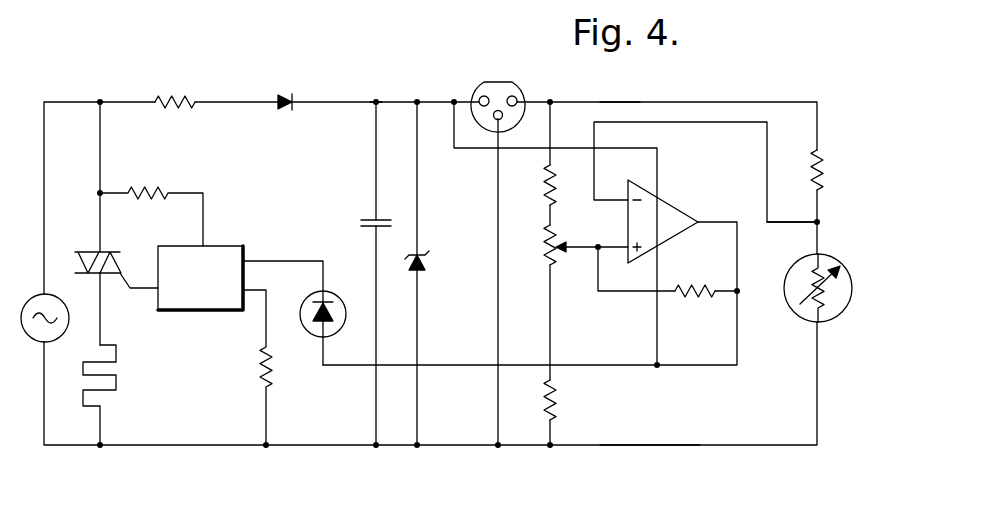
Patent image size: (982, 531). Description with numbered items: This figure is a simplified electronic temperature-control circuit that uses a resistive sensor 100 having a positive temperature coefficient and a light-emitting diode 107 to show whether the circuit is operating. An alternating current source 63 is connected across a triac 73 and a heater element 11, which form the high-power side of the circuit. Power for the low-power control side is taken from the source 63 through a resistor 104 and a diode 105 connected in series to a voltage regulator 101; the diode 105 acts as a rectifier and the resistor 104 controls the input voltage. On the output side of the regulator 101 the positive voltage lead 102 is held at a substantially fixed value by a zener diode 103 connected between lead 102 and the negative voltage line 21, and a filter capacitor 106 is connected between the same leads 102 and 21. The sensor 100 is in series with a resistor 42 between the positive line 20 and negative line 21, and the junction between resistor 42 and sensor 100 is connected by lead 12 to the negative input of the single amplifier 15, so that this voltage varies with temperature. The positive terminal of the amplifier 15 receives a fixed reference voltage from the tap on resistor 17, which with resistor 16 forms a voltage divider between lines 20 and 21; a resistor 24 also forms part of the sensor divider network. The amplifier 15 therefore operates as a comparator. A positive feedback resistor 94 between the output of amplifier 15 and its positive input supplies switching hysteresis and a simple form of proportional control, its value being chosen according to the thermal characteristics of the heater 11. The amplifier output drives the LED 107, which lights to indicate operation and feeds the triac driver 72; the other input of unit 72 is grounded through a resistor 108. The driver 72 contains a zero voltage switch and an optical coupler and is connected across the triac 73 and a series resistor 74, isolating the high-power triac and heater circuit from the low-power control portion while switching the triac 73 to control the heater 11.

The resistor 104 is at (189, 100).
The diode 105 is at (286, 97).
The positive voltage lead 102 is at (348, 100).
The voltage regulator 101 is at (500, 83).
The positive voltage line 20 is at (618, 100).
The resistor 42 is at (825, 172).
The resistor 74 is at (158, 191).
The triac 73 is at (89, 250).
The triac driver 72 is at (229, 246).
The filter capacitor 106 is at (366, 220).
The zener diode 103 is at (430, 265).
The resistor 16 is at (545, 196).
The resistor 17 is at (545, 266).
The amplifier 15 is at (671, 207).
The lead 12 is at (778, 226).
The positive feedback resistor 94 is at (697, 297).
The sensor 100 is at (804, 313).
The light-emitting diode 107 is at (338, 331).
The resistor 108 is at (268, 381).
The heater element 11 is at (116, 389).
The alternating current source 63 is at (37, 339).
The resistor 24 is at (560, 399).
The negative voltage line 21 is at (655, 447).